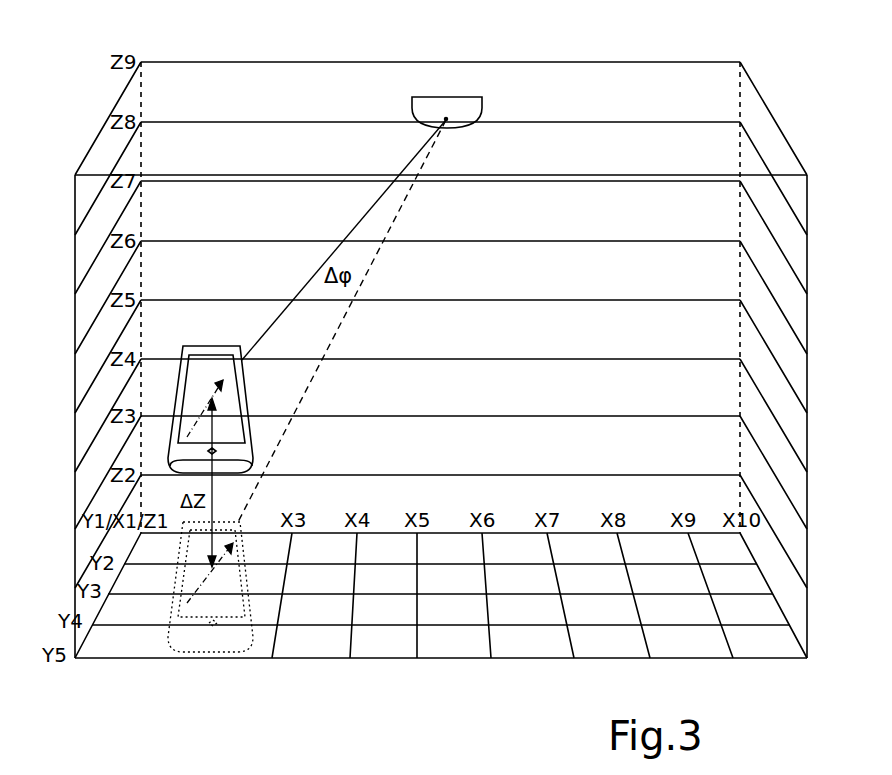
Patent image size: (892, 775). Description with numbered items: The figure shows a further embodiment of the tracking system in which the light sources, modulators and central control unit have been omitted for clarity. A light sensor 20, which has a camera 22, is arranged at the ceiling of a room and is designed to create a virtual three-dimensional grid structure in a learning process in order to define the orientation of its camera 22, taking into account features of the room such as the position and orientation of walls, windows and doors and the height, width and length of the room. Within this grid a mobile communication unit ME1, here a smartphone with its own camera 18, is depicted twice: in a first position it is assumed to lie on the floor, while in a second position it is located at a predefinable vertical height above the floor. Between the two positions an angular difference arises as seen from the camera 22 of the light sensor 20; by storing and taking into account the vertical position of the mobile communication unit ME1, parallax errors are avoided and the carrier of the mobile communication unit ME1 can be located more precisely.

The camera 18 is at (212, 350).
The light sensor 20 is at (458, 100).
The camera 22 is at (446, 121).
The mobile communication unit ME1 is at (243, 397).